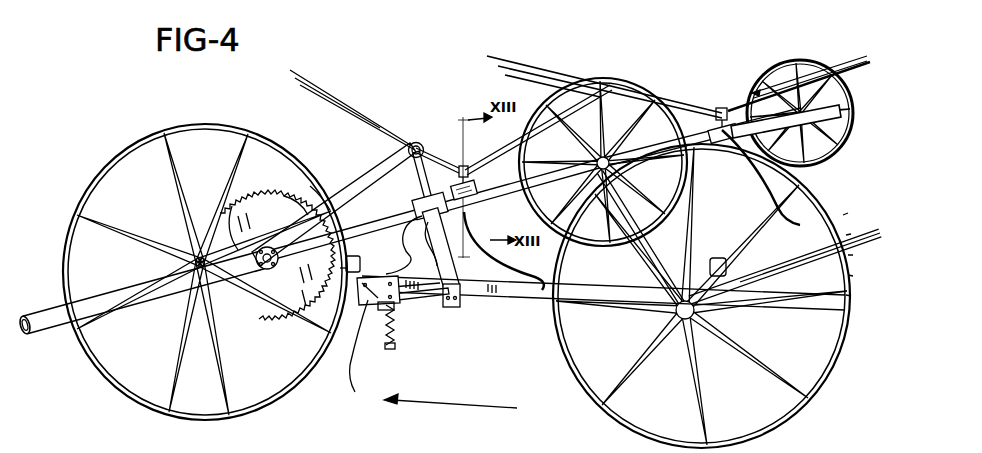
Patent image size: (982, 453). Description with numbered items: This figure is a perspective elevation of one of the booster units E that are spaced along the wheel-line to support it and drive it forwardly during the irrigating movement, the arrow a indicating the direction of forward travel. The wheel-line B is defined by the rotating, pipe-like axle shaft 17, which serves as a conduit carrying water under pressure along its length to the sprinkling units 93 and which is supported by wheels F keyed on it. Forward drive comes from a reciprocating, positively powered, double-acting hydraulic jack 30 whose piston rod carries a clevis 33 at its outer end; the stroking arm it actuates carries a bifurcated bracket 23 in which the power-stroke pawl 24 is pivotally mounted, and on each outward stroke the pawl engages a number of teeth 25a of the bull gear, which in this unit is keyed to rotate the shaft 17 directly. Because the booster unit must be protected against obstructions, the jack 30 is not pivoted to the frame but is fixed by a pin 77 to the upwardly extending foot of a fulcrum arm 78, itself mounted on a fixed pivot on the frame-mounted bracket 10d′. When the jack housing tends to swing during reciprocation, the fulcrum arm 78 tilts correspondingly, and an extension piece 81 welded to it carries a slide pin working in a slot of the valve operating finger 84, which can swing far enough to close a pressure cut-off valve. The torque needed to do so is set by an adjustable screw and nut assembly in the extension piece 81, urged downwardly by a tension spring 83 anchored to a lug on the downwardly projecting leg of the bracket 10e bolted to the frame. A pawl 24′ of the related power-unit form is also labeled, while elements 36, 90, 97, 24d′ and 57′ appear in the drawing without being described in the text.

The water-carrying axle shaft 17 is at (95, 298).
The teeth 25a is at (300, 182).
The pawl 24 is at (314, 192).
The bifurcated bracket 23 is at (350, 199).
The clevis 33 is at (420, 146).
The hydraulic cylinder 36 is at (428, 252).
The hydraulic jack 30 is at (408, 240).
The sprinkling unit 93 is at (466, 166).
The coupling sleeve 90 is at (472, 192).
The booster unit E is at (432, 78).
The wheel F is at (615, 78).
The wheel-line B is at (836, 102).
The tie rod 97 is at (512, 262).
The bracket 10d′ is at (452, 308).
The pin 77 is at (440, 298).
The fulcrum arm 78 is at (428, 300).
The valve operating finger 84 is at (368, 306).
The extension piece 81 is at (382, 312).
The tension spring 83 is at (381, 345).
The bracket 10e is at (396, 348).
The pawl 24′ is at (352, 350).
The pawl end 24d′ is at (356, 388).
The lever 57′ is at (340, 262).
The arrow a is at (446, 404).